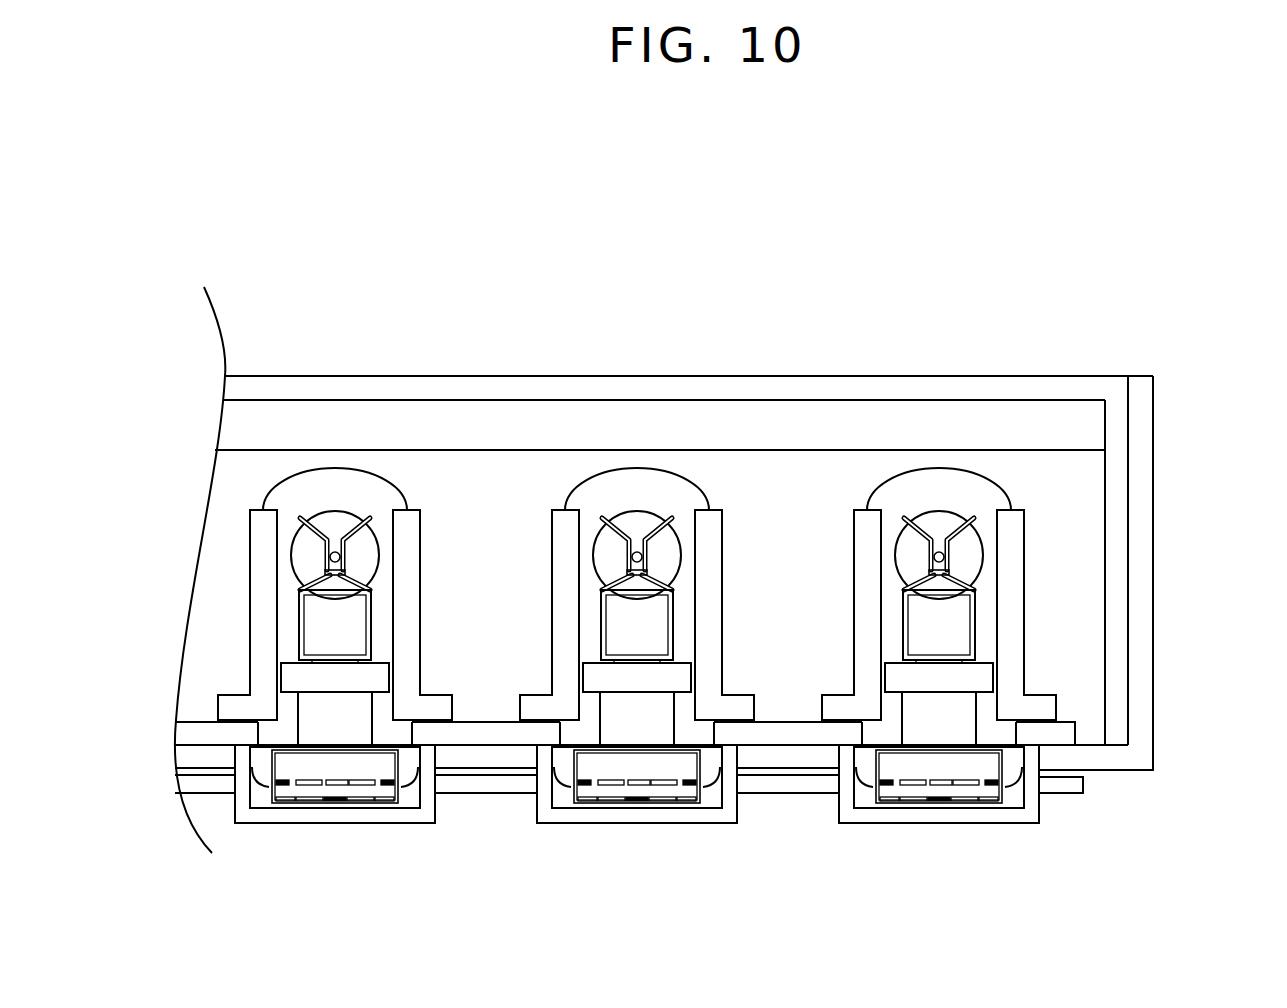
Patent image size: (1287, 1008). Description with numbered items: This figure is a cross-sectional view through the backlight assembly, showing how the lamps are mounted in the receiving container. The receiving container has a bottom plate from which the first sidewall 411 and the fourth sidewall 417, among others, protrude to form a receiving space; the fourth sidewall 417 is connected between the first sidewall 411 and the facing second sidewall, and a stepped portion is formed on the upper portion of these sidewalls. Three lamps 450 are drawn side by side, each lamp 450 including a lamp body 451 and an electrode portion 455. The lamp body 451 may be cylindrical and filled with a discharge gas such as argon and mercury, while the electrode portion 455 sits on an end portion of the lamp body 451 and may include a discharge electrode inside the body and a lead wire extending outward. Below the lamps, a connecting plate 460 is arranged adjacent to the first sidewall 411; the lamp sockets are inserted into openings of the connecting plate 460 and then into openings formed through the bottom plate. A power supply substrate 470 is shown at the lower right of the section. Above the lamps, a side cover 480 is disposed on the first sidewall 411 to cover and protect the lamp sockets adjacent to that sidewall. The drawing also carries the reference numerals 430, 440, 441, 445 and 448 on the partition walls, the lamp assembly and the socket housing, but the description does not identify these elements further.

The first sidewall 411 is at (483, 760).
The fourth sidewall 417 is at (1140, 583).
The partition wall 430 is at (1010, 640).
The lamp unit 440 is at (942, 501).
The lamp lens 441 is at (948, 523).
The lamp bulb 445 is at (920, 528).
The lamp socket housing 448 is at (635, 785).
The lamp 450 is at (641, 501).
The lamp body 451 is at (647, 522).
The electrode portion 455 is at (638, 552).
The connecting plate 460 is at (787, 737).
The power supply substrate 470 is at (1083, 785).
The side cover 480 is at (446, 387).